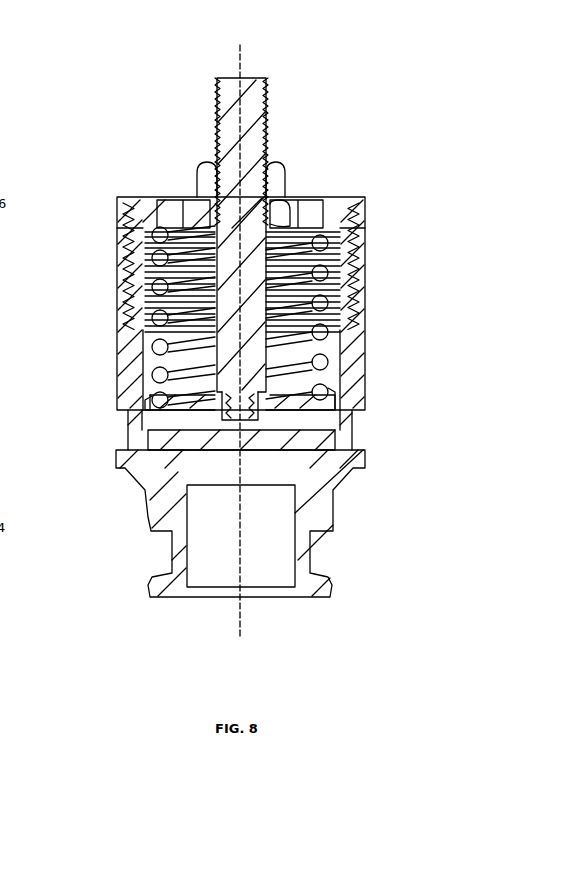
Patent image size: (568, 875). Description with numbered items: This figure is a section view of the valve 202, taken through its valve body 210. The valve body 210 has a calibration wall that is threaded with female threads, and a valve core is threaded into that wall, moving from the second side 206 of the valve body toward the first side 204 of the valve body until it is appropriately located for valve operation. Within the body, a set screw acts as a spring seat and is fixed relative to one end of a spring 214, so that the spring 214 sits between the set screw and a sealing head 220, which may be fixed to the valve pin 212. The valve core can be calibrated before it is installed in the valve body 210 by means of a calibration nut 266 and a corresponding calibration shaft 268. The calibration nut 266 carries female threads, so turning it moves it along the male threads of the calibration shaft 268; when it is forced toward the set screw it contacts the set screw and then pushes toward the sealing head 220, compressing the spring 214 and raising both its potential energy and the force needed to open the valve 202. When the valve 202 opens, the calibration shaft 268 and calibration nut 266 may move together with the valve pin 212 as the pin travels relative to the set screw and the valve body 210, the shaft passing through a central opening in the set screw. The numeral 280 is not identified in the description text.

The valve 202 is at (120, 149).
The first side of the valve body 204 is at (330, 492).
The second side of the valve body 206 is at (360, 220).
The valve body 210 is at (132, 375).
The valve pin 212 is at (255, 358).
The spring 214 is at (335, 392).
The sealing head 220 is at (322, 437).
The calibration nut 266 is at (283, 178).
The calibration shaft 268 is at (258, 113).
The second spring 280 is at (352, 285).